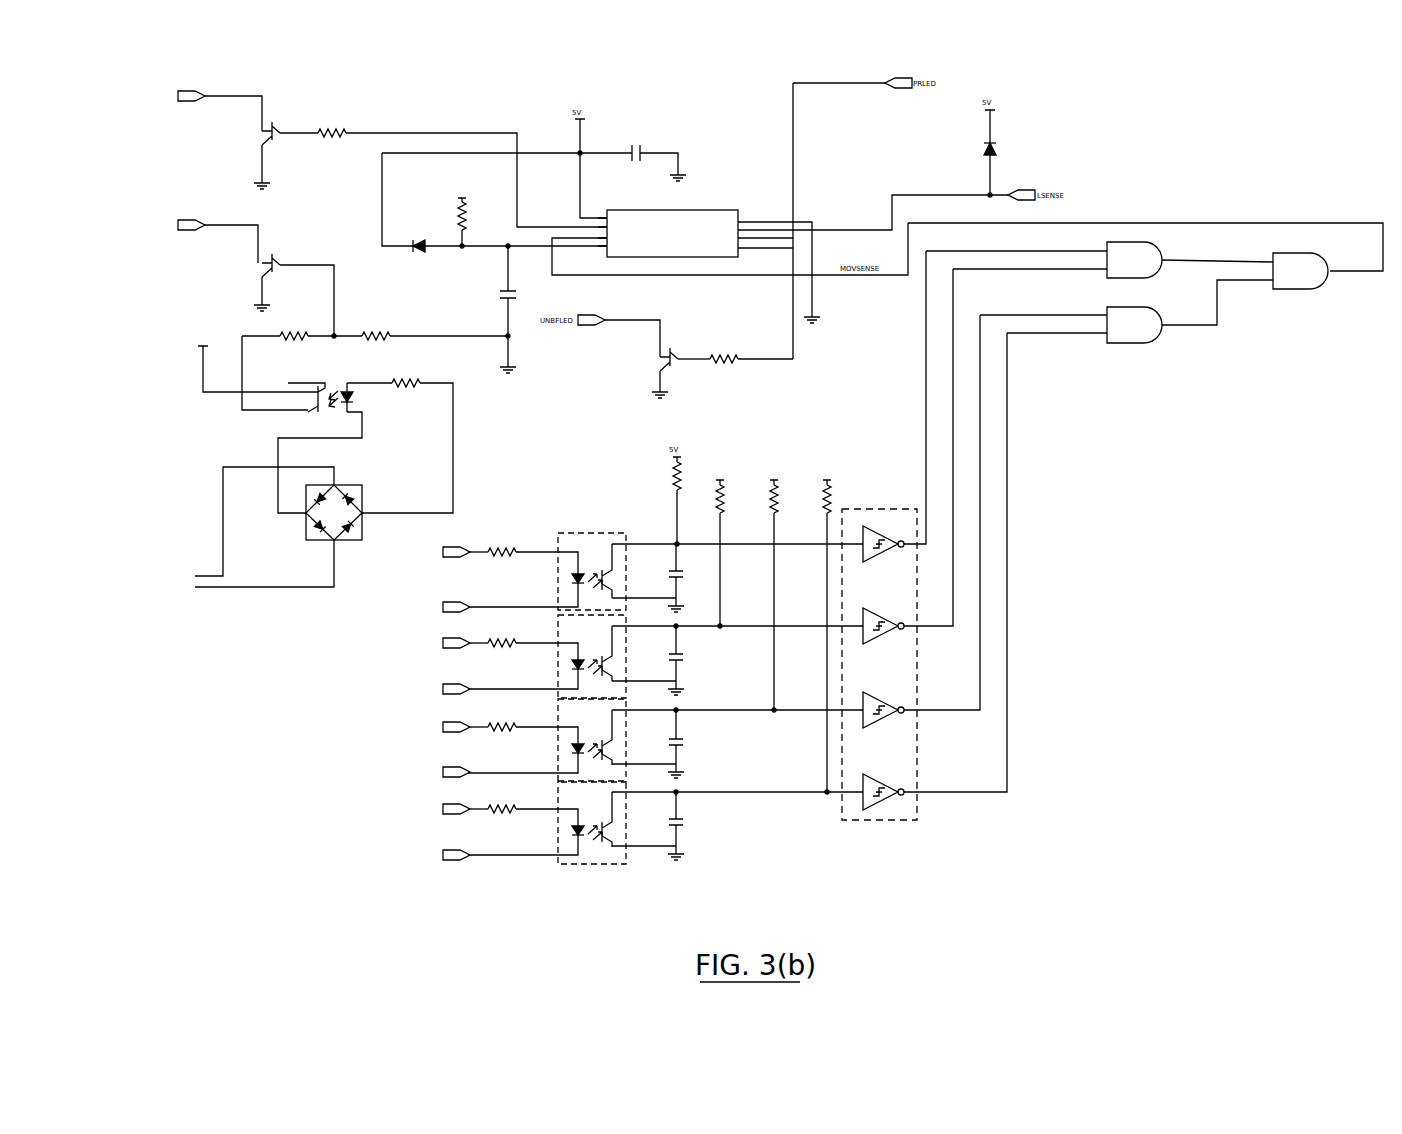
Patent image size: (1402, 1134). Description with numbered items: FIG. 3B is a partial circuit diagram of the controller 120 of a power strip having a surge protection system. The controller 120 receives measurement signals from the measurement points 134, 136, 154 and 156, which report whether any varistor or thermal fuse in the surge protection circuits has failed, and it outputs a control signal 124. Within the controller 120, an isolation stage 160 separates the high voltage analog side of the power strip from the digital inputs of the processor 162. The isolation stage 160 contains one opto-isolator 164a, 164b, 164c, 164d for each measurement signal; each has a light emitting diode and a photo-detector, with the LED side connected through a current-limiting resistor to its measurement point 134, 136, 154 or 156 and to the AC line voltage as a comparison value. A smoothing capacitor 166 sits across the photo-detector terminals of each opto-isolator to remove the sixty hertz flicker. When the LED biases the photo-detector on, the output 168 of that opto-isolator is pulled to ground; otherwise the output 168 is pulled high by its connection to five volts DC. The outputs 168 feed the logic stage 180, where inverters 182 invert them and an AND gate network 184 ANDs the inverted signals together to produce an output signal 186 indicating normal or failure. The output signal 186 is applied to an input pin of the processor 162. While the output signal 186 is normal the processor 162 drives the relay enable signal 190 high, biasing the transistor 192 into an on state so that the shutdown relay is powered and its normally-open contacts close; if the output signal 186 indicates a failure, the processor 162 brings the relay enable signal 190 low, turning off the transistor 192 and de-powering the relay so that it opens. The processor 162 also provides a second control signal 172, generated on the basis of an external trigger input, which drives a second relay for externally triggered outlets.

The controller 120 is at (1250, 754).
The control signal 124 is at (185, 102).
The measurement point 134 is at (449, 732).
The measurement point 136 is at (449, 815).
The measurement point 154 is at (449, 648).
The measurement point 156 is at (449, 557).
The isolation stage 160 is at (580, 939).
The processor 162 is at (702, 210).
The opto-isolator 164a is at (558, 722).
The opto-isolator 164b is at (585, 878).
The opto-isolator 164c is at (558, 640).
The opto-isolator 164d is at (570, 533).
The smoothing capacitor 166 is at (684, 575).
The output 168 is at (662, 541).
The second control signal 172 is at (187, 232).
The logic stage 180 is at (1110, 527).
The inverters 182 is at (893, 825).
The AND gate network 184 is at (1222, 366).
The output signal 186 is at (1287, 223).
The relay enable signal 190 is at (400, 133).
The transistor 192 is at (279, 124).